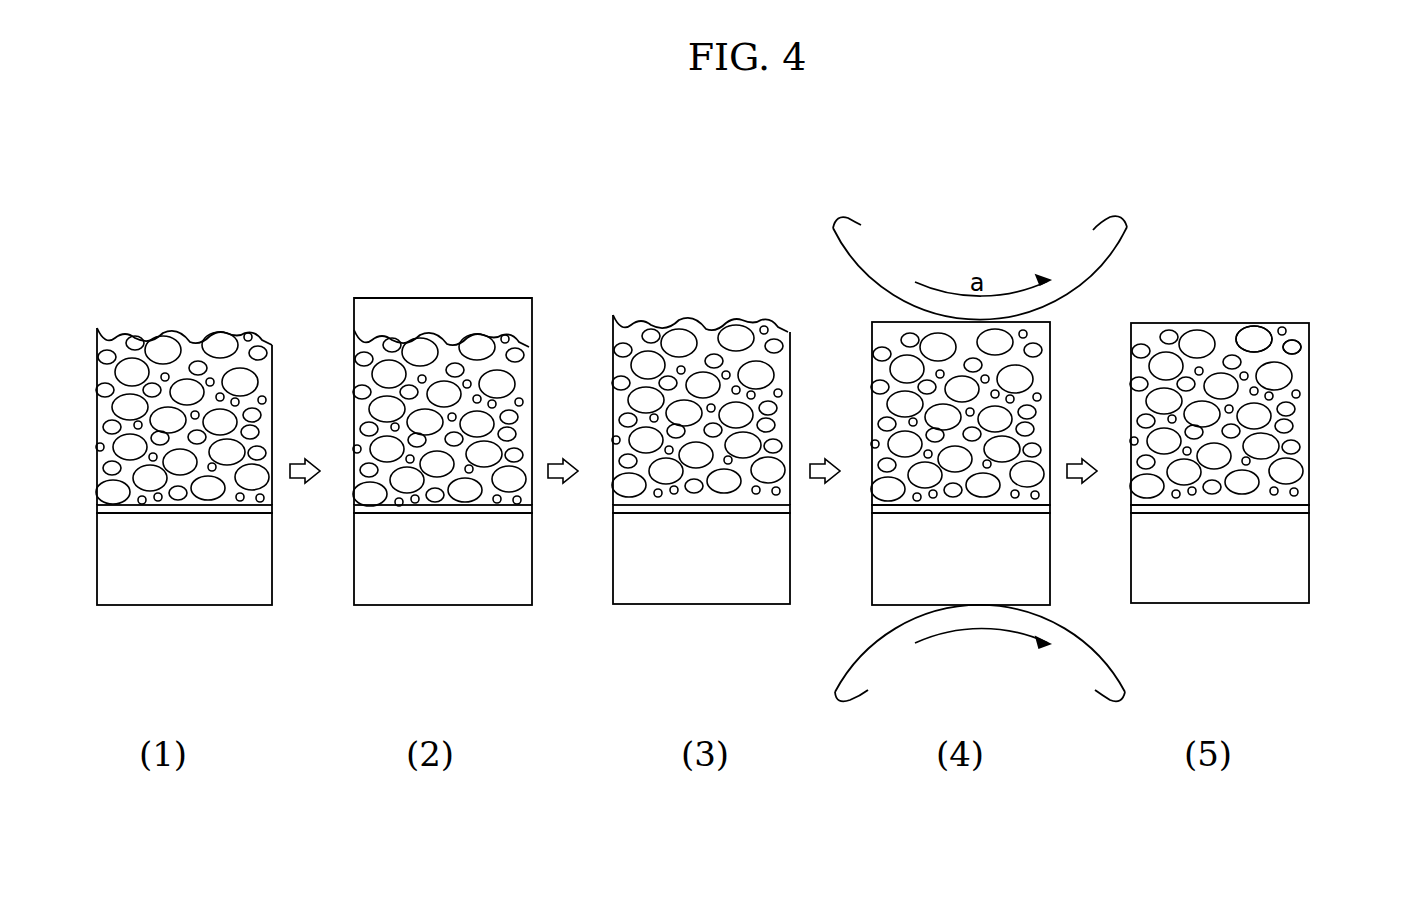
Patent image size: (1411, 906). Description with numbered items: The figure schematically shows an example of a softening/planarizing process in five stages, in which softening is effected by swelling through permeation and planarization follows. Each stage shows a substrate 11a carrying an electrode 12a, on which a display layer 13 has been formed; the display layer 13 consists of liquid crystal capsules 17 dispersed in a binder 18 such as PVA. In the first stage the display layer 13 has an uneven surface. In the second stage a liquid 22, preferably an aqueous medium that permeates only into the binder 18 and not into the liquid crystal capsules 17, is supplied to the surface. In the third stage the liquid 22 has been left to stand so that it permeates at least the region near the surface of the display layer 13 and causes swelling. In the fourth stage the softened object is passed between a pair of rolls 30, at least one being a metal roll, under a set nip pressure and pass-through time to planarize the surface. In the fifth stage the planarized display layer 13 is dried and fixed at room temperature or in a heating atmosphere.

The substrate 11a is at (1303, 562).
The electrode 12a is at (1310, 507).
The display layer 13 is at (1324, 414).
The liquid crystal capsule 17 is at (1252, 330).
The binder 18 is at (1303, 355).
The liquid 22 is at (497, 305).
The pair of rolls 30 is at (1103, 252).